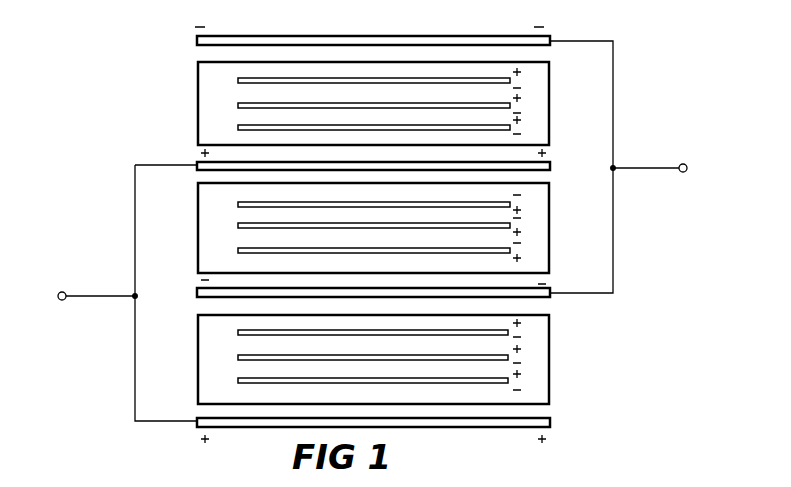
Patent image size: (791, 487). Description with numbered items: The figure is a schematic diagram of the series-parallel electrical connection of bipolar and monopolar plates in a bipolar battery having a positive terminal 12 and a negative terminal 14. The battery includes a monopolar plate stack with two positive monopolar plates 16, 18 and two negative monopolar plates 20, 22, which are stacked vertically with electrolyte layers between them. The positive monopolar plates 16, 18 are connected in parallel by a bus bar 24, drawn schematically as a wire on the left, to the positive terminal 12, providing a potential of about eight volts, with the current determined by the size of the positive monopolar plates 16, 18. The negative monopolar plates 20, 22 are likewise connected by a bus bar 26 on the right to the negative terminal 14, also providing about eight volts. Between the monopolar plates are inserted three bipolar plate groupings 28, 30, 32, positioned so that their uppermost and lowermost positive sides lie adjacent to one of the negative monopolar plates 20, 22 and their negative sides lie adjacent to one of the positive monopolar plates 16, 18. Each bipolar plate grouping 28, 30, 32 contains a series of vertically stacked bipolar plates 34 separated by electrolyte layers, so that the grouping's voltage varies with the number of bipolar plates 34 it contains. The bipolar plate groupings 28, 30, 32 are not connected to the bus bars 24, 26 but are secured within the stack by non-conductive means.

The positive terminal 12 is at (60, 300).
The negative terminal 14 is at (685, 172).
The positive monopolar plate 16 is at (550, 421).
The positive monopolar plate 18 is at (550, 167).
The negative monopolar plate 20 is at (550, 297).
The negative monopolar plate 22 is at (551, 39).
The bus bar 24 is at (135, 405).
The bus bar 26 is at (613, 104).
The bipolar plate grouping 28 is at (198, 85).
The bipolar plate grouping 30 is at (550, 237).
The bipolar plate grouping 32 is at (550, 368).
The bipolar plates 34 is at (238, 127).